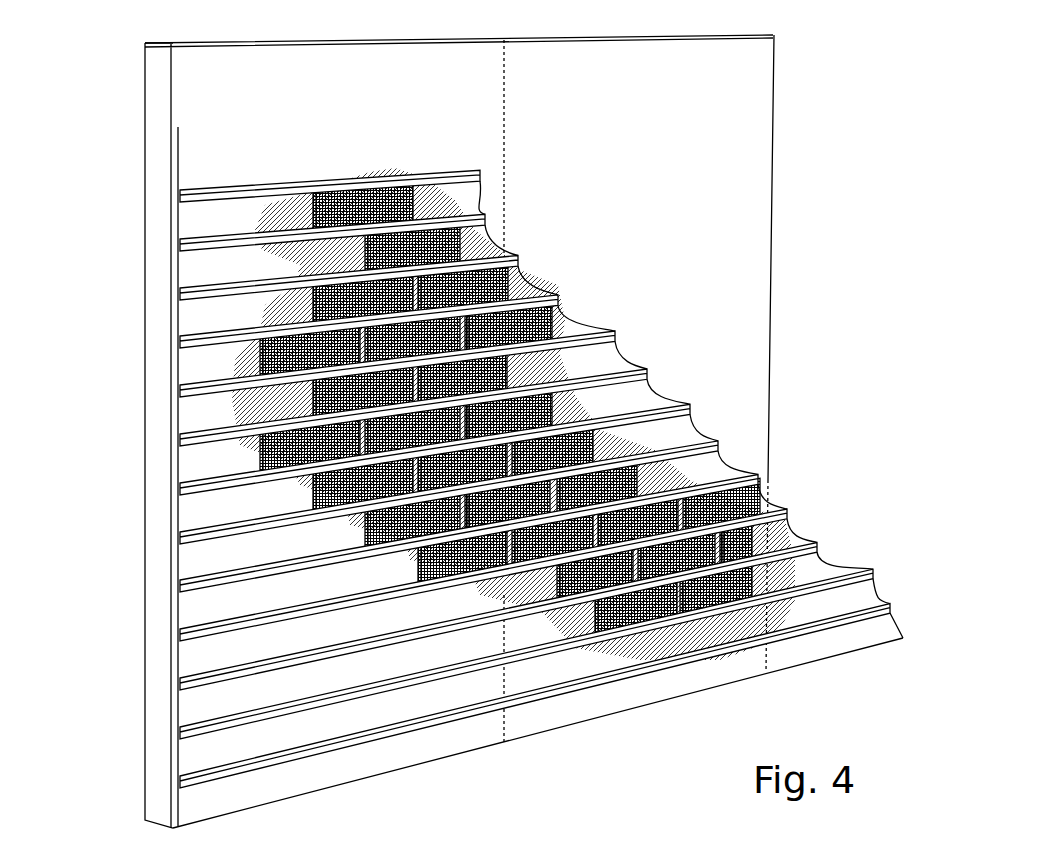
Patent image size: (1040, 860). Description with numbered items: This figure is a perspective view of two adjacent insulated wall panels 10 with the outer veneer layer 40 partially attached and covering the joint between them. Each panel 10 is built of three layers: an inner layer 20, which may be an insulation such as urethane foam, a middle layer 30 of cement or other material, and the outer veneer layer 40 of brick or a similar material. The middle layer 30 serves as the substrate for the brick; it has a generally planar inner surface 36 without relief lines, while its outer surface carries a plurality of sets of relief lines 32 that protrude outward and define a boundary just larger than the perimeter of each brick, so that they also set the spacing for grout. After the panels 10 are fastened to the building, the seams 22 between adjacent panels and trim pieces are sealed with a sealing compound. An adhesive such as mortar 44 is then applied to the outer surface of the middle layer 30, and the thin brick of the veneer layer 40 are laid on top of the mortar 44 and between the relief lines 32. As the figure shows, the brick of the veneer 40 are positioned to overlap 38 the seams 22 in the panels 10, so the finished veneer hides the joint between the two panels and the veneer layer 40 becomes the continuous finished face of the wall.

The insulated wall panel 10 is at (527, 431).
The inner layer 20 is at (733, 185).
The seams 22 is at (505, 53).
The middle layer 30 is at (225, 263).
The relief lines 32 is at (183, 343).
The inner surface 36 is at (168, 217).
The overlap 38 is at (558, 328).
The outer veneer layer 40 is at (245, 460).
The mortar 44 is at (892, 608).